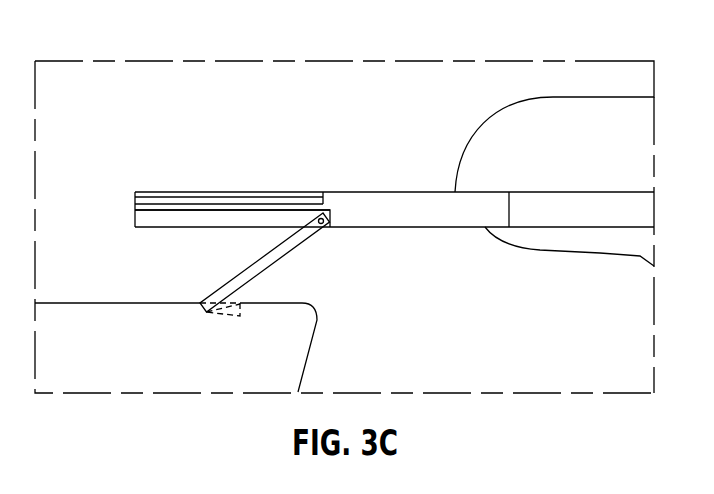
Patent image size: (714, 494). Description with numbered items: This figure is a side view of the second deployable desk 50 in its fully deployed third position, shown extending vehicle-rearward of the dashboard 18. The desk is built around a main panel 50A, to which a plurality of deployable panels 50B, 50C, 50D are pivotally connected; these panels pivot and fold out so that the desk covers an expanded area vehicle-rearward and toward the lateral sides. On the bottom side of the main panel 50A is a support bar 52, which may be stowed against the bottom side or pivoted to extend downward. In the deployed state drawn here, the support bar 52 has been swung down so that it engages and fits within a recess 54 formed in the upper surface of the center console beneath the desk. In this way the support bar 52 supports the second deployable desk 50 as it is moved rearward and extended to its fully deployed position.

The dashboard 18 is at (601, 97).
The second deployable desk 50 is at (353, 163).
The main panel 50A is at (370, 192).
The deployable panel 50B is at (140, 209).
The deployable panel 50C is at (205, 197).
The deployable panel 50D is at (158, 200).
The support bar 52 is at (263, 268).
The recess 54 is at (214, 311).